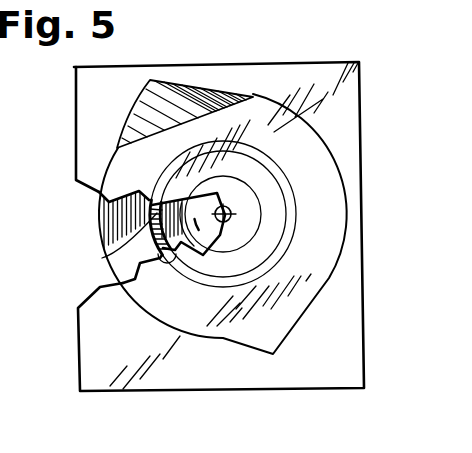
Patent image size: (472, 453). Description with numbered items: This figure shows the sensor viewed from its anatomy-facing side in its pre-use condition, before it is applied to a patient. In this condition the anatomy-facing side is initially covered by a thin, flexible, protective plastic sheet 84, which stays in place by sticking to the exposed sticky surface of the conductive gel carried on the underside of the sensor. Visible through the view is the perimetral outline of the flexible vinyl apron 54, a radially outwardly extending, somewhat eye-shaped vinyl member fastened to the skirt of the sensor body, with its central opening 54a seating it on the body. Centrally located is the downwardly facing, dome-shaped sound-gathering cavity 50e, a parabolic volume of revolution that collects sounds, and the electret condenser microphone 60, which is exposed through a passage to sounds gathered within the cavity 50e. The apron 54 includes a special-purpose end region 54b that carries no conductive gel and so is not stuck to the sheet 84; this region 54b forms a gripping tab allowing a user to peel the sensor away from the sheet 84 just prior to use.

The protective sheet 84 is at (95, 124).
The apron 54 is at (99, 214).
The central opening 54a is at (166, 246).
The special-purpose end region 54b is at (198, 103).
The electret condenser microphone 60 is at (234, 214).
The sound-gathering cavity 50e is at (102, 258).